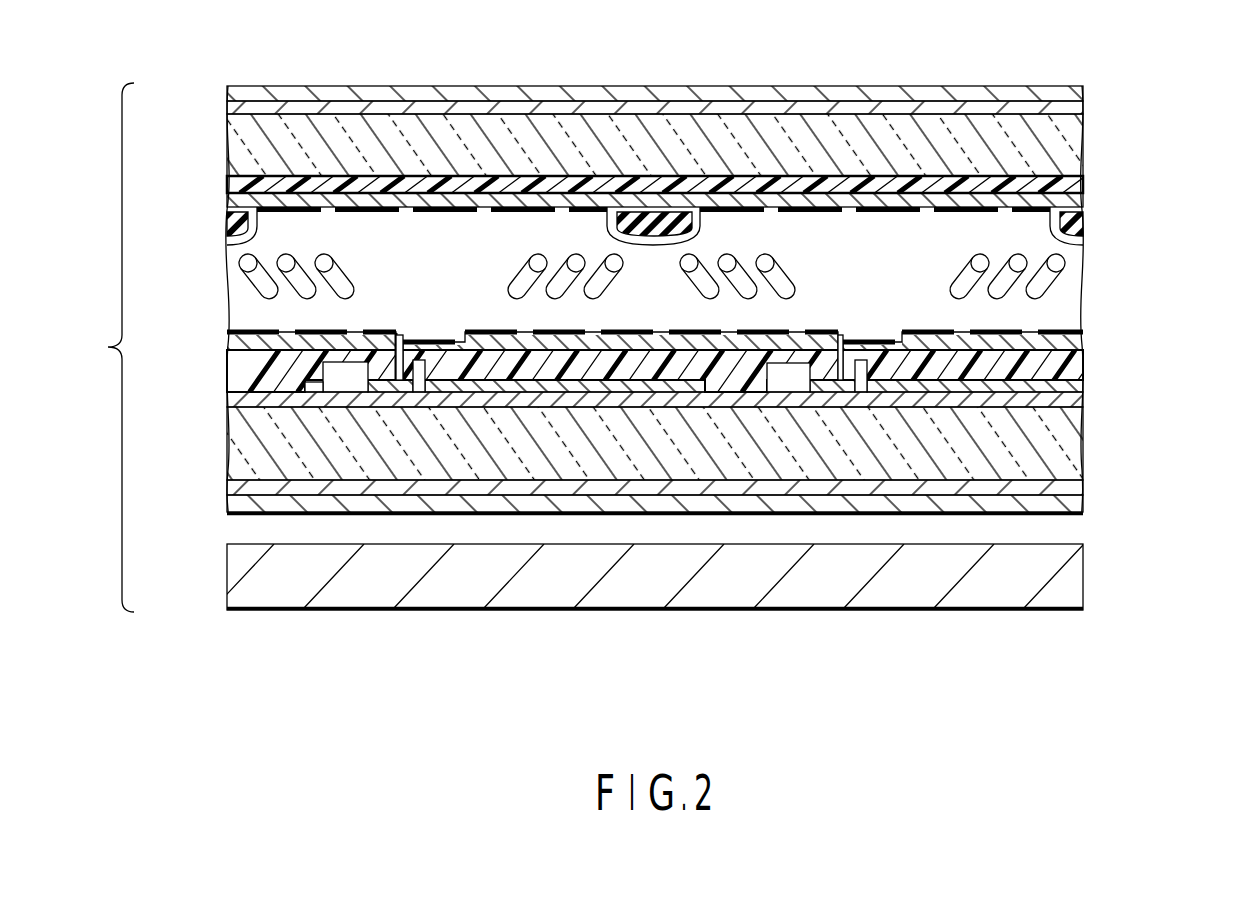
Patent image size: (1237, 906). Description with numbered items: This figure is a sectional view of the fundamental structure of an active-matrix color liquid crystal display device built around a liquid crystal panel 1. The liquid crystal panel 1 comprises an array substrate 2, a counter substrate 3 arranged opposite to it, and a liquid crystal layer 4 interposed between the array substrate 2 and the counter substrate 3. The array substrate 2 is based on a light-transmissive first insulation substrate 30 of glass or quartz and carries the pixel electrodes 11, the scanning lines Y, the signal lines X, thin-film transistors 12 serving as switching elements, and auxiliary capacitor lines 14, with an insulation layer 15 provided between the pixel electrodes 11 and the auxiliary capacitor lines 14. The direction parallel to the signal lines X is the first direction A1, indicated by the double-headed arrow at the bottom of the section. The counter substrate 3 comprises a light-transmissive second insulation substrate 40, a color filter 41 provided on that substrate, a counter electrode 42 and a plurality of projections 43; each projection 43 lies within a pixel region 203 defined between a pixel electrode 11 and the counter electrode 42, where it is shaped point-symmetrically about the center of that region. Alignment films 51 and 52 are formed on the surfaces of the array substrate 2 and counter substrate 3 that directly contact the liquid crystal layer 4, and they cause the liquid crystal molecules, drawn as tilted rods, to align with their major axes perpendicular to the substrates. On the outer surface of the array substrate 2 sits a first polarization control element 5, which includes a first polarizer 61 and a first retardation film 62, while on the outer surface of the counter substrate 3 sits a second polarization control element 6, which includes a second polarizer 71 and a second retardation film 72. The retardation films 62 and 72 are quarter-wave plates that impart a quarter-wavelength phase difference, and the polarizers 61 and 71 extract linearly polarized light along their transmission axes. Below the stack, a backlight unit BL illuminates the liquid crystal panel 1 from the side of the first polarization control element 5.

The liquid crystal panel 1 is at (1172, 117).
The array substrate 2 is at (1095, 332).
The counter substrate 3 is at (1095, 115).
The liquid crystal layer 4 is at (1095, 212).
The first polarization control element 5 is at (1160, 482).
The second polarization control element 6 is at (1160, 88).
The pixel electrode 11 is at (236, 343).
The thin-film transistor 12 is at (418, 378).
The auxiliary capacitor line 14 is at (590, 386).
The insulation layer 15 is at (236, 366).
The first insulation substrate 30 is at (240, 440).
The second insulation substrate 40 is at (240, 145).
The color filter 41 is at (236, 184).
The counter electrode 42 is at (234, 200).
The projection 43 is at (236, 220).
The alignment film 51 is at (232, 332).
The alignment film 52 is at (229, 238).
The first polarizer 61 is at (236, 503).
The first retardation film 62 is at (236, 487).
The second polarizer 71 is at (232, 93).
The second retardation film 72 is at (232, 107).
The signal line X is at (236, 400).
The scanning line Y is at (345, 378).
The backlight unit BL is at (240, 575).
The pixel region 203 is at (843, 80).
The first direction A1 is at (240, 712).